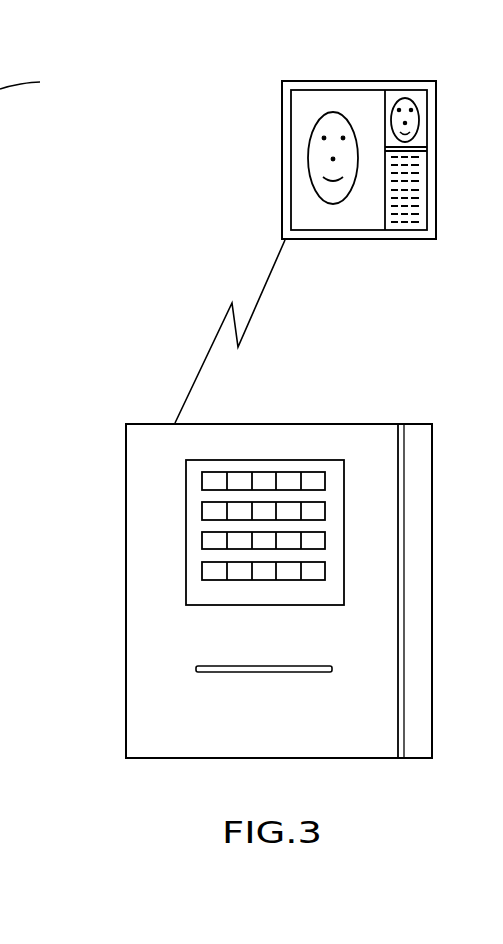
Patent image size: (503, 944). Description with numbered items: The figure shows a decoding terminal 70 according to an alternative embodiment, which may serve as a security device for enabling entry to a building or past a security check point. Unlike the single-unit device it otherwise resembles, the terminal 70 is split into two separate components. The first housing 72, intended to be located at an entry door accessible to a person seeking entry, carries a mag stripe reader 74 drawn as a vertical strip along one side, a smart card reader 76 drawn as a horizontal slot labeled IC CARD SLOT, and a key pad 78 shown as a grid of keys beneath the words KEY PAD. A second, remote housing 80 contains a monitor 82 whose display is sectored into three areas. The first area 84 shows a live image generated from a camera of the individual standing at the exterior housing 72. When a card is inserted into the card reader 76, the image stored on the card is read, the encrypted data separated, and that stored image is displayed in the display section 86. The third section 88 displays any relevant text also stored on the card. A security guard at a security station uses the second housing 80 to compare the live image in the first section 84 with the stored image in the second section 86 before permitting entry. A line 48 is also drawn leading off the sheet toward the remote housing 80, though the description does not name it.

The communication line 48 is at (40, 82).
The decoding terminal 70 is at (248, 593).
The first housing 72 is at (138, 603).
The mag stripe reader 74 is at (412, 484).
The smart card reader 76 is at (280, 663).
The key pad 78 is at (313, 462).
The second remote housing 80 is at (320, 81).
The monitor 82 is at (312, 110).
The first area 84 is at (351, 215).
The display section 86 is at (393, 91).
The third section 88 is at (408, 228).